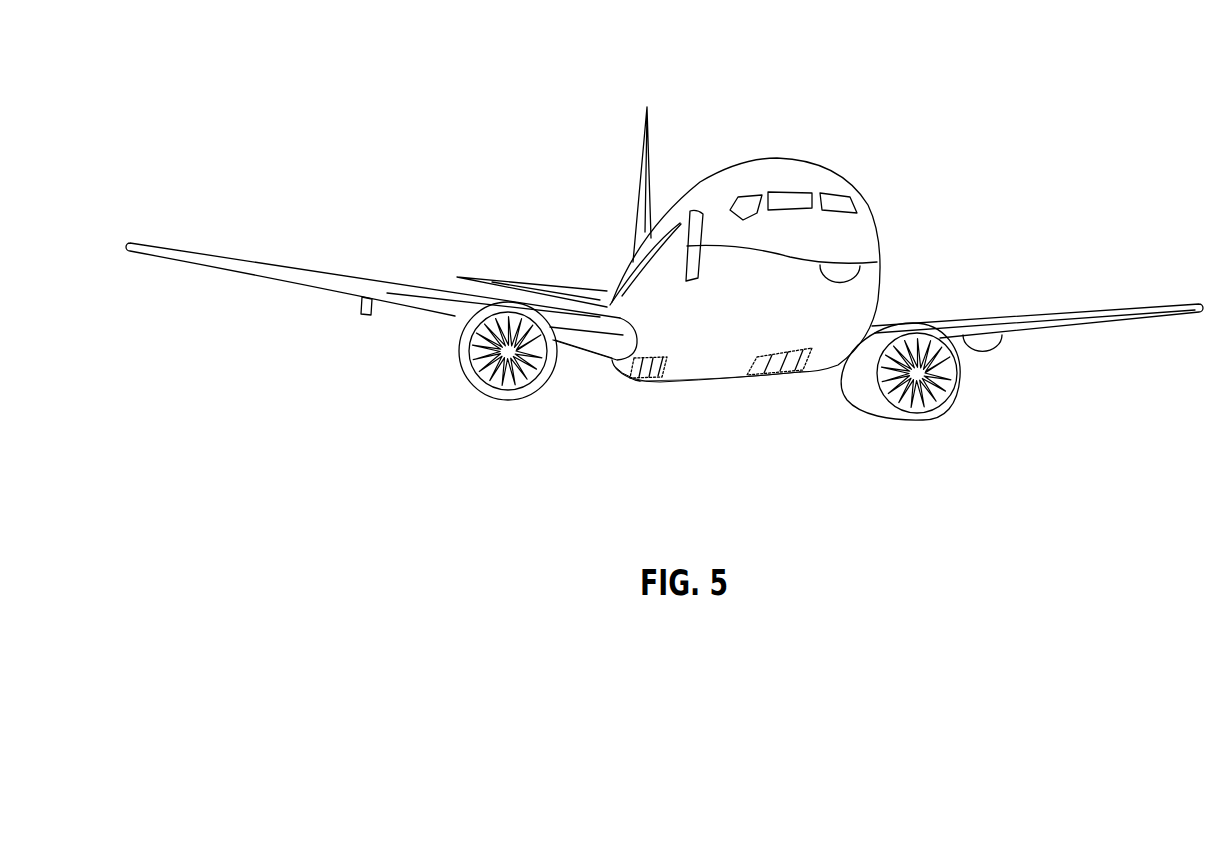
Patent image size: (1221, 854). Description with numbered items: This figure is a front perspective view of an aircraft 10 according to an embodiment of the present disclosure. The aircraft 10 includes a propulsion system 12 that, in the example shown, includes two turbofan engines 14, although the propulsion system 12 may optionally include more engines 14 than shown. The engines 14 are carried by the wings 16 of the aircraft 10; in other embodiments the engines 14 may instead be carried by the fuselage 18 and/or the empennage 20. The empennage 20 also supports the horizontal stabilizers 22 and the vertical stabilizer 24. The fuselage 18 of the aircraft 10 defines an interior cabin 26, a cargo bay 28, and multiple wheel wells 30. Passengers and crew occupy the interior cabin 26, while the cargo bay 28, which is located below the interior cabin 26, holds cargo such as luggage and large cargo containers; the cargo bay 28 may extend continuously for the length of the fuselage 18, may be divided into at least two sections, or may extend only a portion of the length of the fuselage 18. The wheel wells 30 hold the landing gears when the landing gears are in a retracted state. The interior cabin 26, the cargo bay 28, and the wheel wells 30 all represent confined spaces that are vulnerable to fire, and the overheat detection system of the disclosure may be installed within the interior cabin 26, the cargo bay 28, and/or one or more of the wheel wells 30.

The aircraft 10 is at (400, 55).
The propulsion system 12 is at (1003, 411).
The turbofan engines 14 is at (500, 397).
The wings 16 is at (273, 270).
The fuselage 18 is at (882, 222).
The empennage 20 is at (633, 260).
The horizontal stabilizers 22 is at (498, 281).
The vertical stabilizer 24 is at (642, 152).
The interior cabin 26 is at (628, 264).
The cargo bay 28 is at (688, 346).
The wheel wells 30 is at (640, 375).